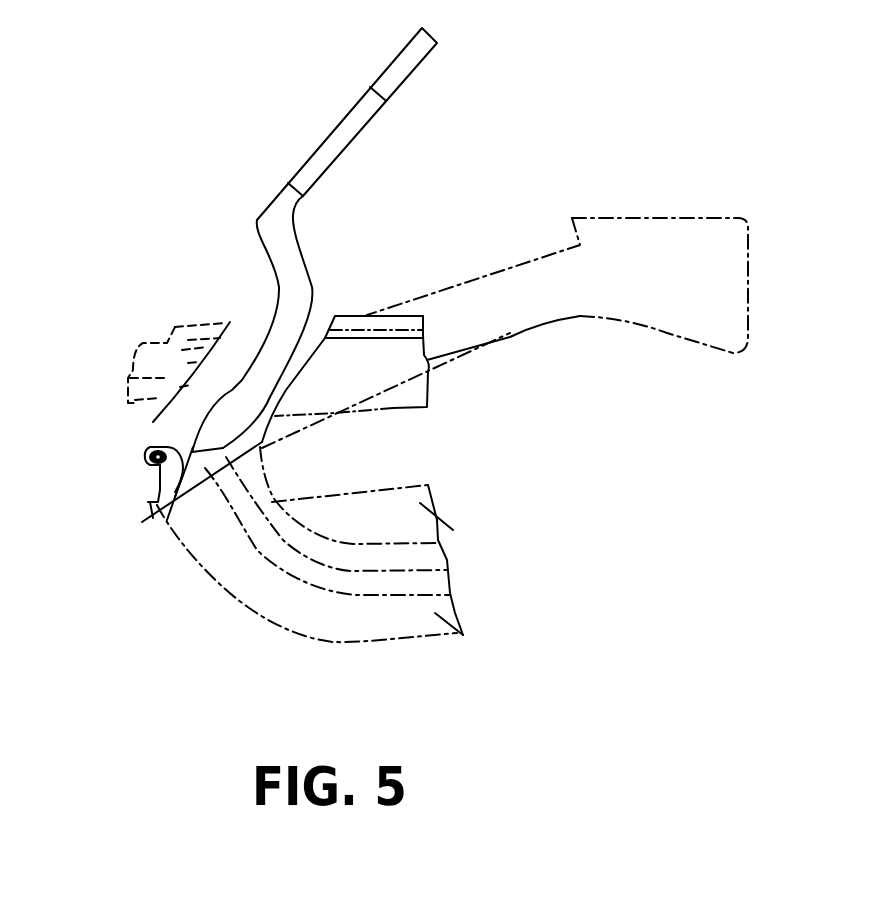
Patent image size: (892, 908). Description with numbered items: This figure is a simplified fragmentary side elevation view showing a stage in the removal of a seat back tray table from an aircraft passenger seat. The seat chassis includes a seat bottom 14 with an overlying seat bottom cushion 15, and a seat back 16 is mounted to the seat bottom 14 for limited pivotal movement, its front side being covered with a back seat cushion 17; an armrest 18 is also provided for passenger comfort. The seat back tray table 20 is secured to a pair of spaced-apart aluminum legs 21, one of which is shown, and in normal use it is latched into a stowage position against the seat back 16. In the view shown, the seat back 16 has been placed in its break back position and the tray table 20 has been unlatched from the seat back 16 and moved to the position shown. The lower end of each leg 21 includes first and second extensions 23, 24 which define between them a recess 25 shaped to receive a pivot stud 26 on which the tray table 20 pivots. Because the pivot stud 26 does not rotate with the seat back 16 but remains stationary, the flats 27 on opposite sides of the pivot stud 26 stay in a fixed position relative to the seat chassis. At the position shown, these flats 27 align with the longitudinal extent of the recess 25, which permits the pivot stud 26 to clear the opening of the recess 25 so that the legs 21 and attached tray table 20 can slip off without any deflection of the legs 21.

The seat bottom 14 is at (463, 635).
The seat bottom cushion 15 is at (420, 503).
The seat back 16 is at (621, 228).
The back seat cushion 17 is at (628, 293).
The armrest 18 is at (367, 350).
The seat back tray table 20 is at (370, 88).
The legs 21 is at (297, 270).
The first extension 23 is at (157, 447).
The second extension 24 is at (152, 502).
The recess 25 is at (145, 528).
The pivot stud 26 is at (160, 447).
The flats 27 is at (158, 452).